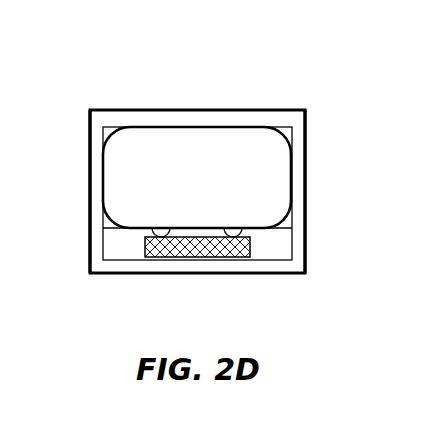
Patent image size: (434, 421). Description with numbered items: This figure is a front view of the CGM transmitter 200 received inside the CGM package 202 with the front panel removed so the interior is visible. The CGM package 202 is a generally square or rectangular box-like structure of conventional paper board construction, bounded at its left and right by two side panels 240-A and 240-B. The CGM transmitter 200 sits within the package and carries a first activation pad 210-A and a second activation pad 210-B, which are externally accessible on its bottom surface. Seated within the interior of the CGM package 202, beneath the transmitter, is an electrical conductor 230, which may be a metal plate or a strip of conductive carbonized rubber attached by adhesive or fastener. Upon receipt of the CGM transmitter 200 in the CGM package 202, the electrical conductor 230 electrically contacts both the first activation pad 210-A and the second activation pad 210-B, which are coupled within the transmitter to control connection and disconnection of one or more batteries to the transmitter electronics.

The CGM transmitter 200 is at (108, 130).
The CGM package 202 is at (187, 110).
The side panel 240-A is at (90, 190).
The side panel 240-B is at (306, 129).
The first activation pad 210-A is at (249, 235).
The second activation pad 210-B is at (146, 235).
The electrical conductor 230 is at (193, 257).